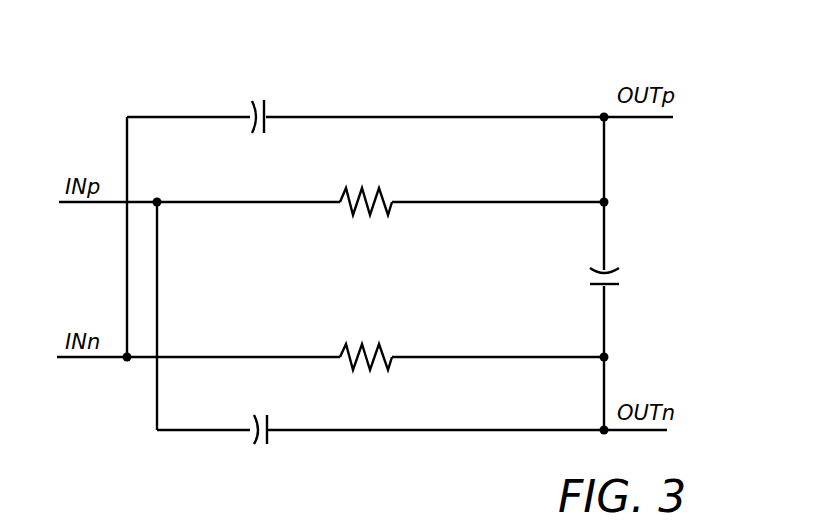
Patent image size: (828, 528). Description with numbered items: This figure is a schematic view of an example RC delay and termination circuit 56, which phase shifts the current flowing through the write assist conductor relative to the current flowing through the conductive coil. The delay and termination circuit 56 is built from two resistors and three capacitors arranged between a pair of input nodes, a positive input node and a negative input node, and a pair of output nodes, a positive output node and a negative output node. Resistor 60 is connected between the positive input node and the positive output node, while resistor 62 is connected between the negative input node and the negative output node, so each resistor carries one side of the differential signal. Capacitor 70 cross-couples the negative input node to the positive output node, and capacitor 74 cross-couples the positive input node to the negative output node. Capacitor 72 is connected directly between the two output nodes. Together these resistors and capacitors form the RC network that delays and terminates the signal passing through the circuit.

The RC delay and termination circuit 56 is at (527, 88).
The resistor 60 is at (380, 192).
The resistor 62 is at (383, 348).
The capacitor 70 is at (264, 101).
The capacitor 72 is at (610, 286).
The capacitor 74 is at (268, 440).